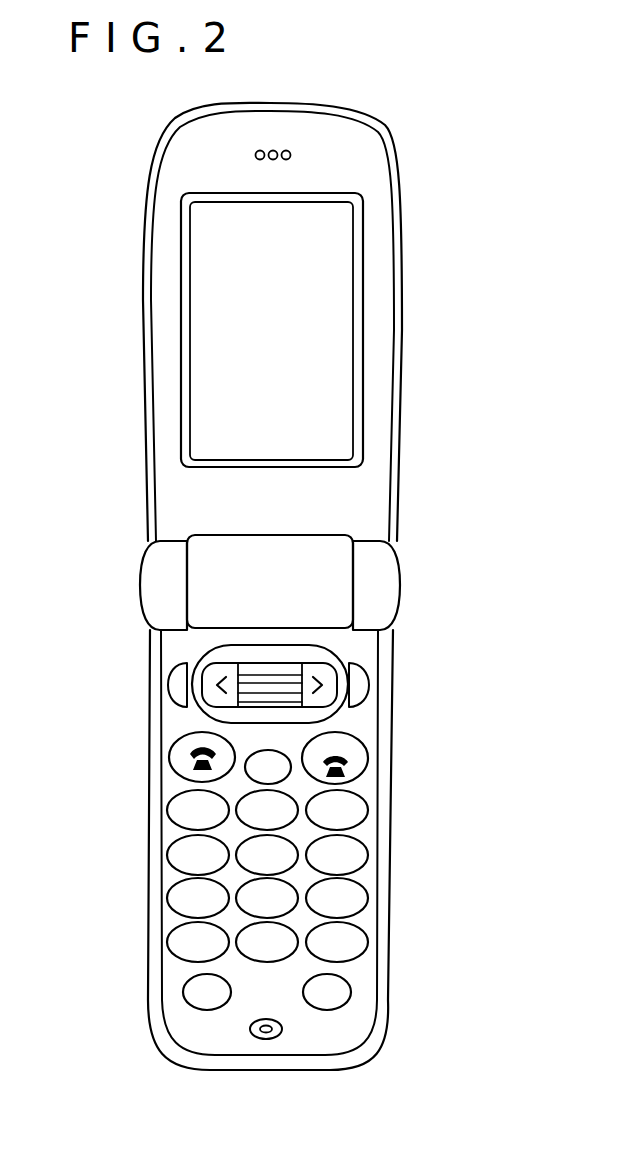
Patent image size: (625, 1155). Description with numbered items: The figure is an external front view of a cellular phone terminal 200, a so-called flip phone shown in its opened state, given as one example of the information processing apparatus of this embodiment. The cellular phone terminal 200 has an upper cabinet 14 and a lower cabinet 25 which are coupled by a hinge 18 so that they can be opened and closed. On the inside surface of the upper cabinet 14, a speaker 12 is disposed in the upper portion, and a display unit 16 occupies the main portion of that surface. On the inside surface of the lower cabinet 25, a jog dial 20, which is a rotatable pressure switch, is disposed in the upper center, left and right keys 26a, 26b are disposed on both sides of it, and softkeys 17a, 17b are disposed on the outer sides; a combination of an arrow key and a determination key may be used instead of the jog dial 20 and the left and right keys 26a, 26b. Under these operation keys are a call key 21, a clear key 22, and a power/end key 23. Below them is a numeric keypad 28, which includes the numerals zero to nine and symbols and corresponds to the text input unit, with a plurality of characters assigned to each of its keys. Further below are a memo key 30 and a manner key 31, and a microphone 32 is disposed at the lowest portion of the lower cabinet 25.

The cellular phone terminal 200 is at (443, 55).
The speaker 12 is at (288, 149).
The upper cabinet 14 is at (414, 310).
The display unit 16 is at (200, 345).
The hinge 18 is at (142, 572).
The softkey 17a is at (178, 680).
The softkey 17b is at (360, 686).
The jog dial 20 is at (275, 678).
The left key 26a is at (213, 700).
The right key 26b is at (318, 700).
The call key 21 is at (178, 757).
The clear key 22 is at (285, 780).
The power/end key 23 is at (357, 768).
The lower cabinet 25 is at (397, 895).
The numeric keypad 28 is at (128, 793).
The memo key 30 is at (352, 988).
The manner key 31 is at (183, 1000).
The microphone 32 is at (283, 1033).